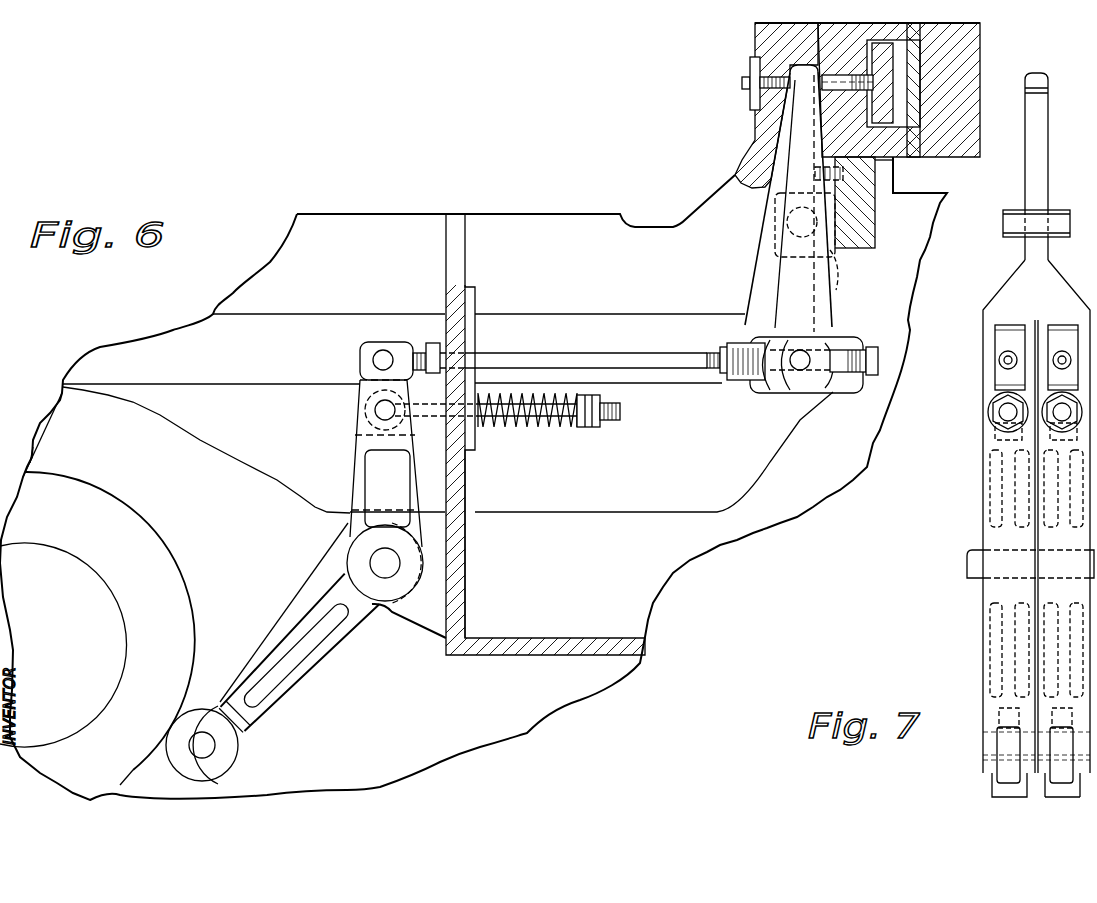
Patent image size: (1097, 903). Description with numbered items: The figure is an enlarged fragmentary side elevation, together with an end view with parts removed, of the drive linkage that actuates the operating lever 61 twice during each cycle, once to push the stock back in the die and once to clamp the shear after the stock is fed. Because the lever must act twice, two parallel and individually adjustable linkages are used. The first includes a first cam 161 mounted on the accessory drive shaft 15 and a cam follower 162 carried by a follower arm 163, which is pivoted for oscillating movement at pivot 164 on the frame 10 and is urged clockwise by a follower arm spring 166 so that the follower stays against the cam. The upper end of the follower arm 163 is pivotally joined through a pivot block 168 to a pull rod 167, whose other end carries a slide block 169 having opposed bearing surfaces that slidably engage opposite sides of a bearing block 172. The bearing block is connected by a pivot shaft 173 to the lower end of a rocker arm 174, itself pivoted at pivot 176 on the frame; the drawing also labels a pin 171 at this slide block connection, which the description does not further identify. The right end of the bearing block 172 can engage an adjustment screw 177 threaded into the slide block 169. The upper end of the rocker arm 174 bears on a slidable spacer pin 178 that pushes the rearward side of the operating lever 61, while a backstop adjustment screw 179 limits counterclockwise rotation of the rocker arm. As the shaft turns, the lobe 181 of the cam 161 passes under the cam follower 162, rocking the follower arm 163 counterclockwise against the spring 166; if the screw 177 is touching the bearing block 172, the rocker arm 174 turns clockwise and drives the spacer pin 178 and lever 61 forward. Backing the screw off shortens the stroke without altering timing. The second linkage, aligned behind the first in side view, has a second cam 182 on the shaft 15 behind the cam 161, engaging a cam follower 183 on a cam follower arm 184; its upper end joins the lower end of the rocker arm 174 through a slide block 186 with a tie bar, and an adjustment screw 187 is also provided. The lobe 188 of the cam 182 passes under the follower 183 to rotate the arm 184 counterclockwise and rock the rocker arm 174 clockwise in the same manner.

In FIG. 6, the frame 10 is at (683, 201).
In FIG. 6, the accessory drive shaft 15 is at (58, 637).
In FIG. 6, the operating lever 61 is at (895, 92).
In FIG. 6, the first cam 161 is at (183, 556).
In FIG. 7, the first cam 161 is at (993, 790).
In FIG. 6, the cam follower 162 is at (240, 758).
In FIG. 7, the cam follower 162 is at (1005, 750).
In FIG. 6, the follower arm 163 is at (328, 660).
In FIG. 7, the follower arm 163 is at (988, 667).
In FIG. 6, the pivot 164 is at (398, 585).
In FIG. 6, the follower arm spring 166 is at (555, 428).
In FIG. 6, the pull rod 167 is at (548, 356).
In FIG. 6, the pivot block 168 is at (412, 345).
In FIG. 6, the slide block 169 is at (792, 394).
In FIG. 7, the slide block 169 is at (1000, 338).
In FIG. 6, the pin 171 is at (784, 343).
In FIG. 6, the bearing block 172 is at (765, 378).
In FIG. 6, the pivot shaft 173 is at (775, 348).
In FIG. 6, the rocker arm 174 is at (833, 296).
In FIG. 7, the rocker arm 174 is at (995, 296).
In FIG. 6, the pivot 176 is at (790, 230).
In FIG. 6, the adjustment screw 177 is at (872, 358).
In FIG. 7, the adjustment screw 177 is at (1000, 364).
In FIG. 6, the spacer pin 178 is at (858, 100).
In FIG. 6, the backstop adjustment screw 179 is at (742, 84).
In FIG. 6, the lobe 181 is at (140, 773).
In FIG. 6, the second cam 182 is at (53, 472).
In FIG. 7, the second cam 182 is at (1048, 783).
In FIG. 7, the cam follower 183 is at (1062, 733).
In FIG. 7, the cam follower arm 184 is at (1047, 633).
In FIG. 7, the slide block 186 is at (1052, 340).
In FIG. 7, the adjustment screw 187 is at (1064, 352).
In FIG. 6, the lobe 188 is at (38, 468).